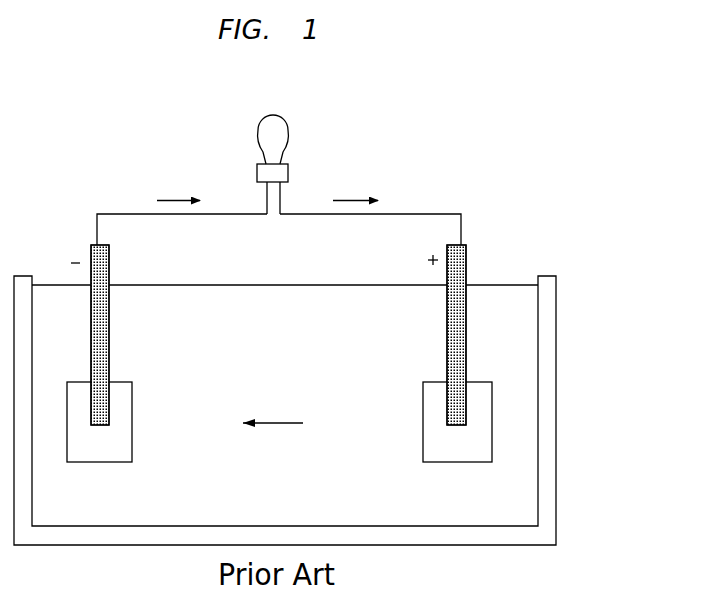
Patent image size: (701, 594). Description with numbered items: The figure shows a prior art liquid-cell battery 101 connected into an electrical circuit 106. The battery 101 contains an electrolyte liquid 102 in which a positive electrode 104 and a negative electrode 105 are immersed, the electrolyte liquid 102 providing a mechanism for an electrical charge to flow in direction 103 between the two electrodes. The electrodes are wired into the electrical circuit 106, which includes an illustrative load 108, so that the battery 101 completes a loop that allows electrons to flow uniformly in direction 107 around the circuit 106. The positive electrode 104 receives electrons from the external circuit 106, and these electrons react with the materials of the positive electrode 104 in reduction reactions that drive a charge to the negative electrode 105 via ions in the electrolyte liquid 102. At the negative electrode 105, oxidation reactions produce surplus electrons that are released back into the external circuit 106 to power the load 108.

The liquid-cell battery 101 is at (645, 169).
The electrolyte liquid 102 is at (338, 290).
The direction of charge flow 103 is at (280, 423).
The positive electrode 104 is at (468, 267).
The negative electrode 105 is at (110, 266).
The electrical circuit 106 is at (238, 218).
The direction of electron flow 107 is at (172, 201).
The load 108 is at (290, 137).